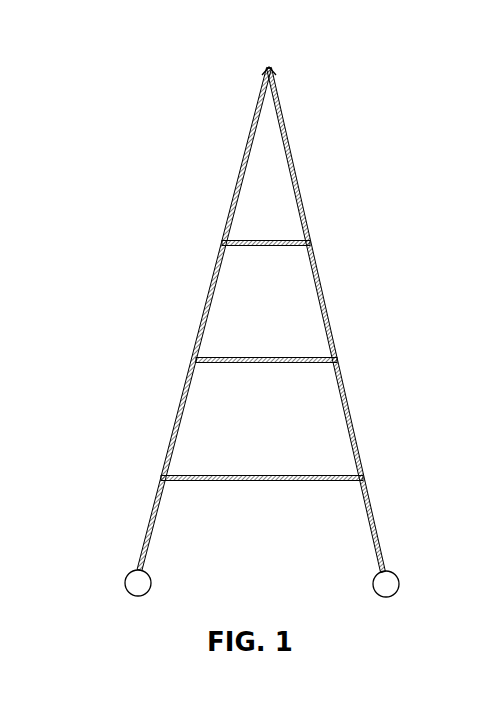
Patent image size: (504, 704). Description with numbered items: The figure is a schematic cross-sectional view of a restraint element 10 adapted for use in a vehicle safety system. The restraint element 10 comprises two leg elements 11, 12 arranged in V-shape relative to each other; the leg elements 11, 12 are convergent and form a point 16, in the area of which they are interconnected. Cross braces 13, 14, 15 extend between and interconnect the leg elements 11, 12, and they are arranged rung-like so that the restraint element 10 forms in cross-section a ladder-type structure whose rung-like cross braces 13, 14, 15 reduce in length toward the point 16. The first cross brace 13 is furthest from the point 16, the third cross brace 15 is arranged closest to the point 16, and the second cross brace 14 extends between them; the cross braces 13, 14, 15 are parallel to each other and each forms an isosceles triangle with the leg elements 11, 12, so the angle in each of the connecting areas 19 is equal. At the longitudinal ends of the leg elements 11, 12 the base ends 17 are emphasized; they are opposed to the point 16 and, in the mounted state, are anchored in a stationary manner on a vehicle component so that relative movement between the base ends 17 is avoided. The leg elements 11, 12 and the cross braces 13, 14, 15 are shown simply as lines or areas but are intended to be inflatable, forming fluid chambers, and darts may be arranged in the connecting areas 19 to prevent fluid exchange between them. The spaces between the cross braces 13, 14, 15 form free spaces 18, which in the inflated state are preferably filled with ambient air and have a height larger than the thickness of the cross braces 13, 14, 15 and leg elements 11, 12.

The restraint element 10 is at (374, 129).
The leg element 11 is at (212, 300).
The leg element 12 is at (332, 324).
The first cross brace 13 is at (278, 476).
The second cross brace 14 is at (275, 358).
The third cross brace 15 is at (262, 241).
The point 16 is at (270, 67).
The base ends 17 is at (135, 585).
The free spaces 18 is at (267, 151).
The connecting areas 19 is at (220, 242).